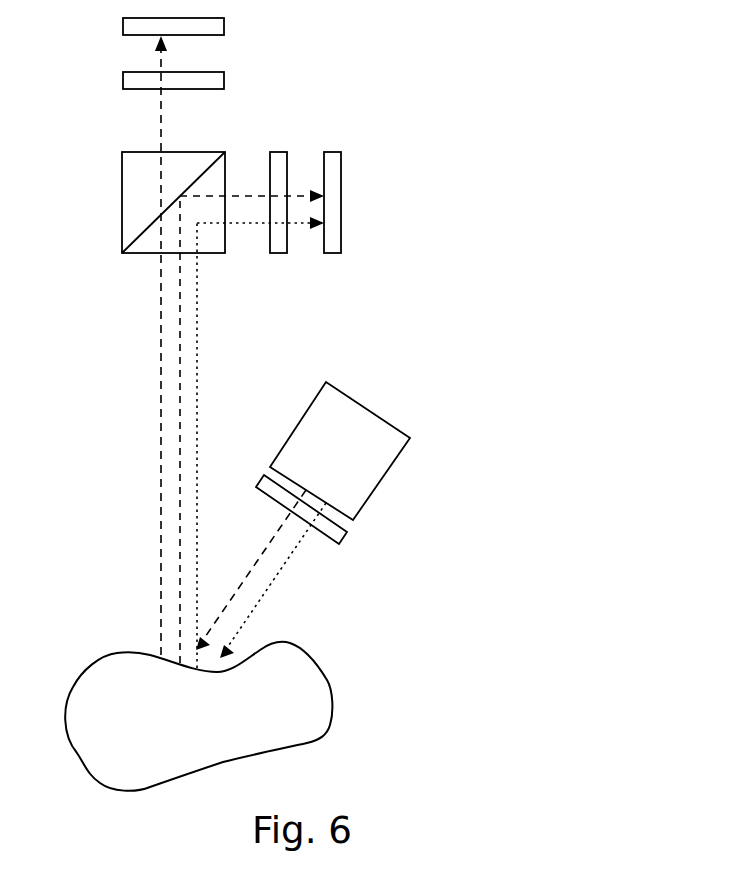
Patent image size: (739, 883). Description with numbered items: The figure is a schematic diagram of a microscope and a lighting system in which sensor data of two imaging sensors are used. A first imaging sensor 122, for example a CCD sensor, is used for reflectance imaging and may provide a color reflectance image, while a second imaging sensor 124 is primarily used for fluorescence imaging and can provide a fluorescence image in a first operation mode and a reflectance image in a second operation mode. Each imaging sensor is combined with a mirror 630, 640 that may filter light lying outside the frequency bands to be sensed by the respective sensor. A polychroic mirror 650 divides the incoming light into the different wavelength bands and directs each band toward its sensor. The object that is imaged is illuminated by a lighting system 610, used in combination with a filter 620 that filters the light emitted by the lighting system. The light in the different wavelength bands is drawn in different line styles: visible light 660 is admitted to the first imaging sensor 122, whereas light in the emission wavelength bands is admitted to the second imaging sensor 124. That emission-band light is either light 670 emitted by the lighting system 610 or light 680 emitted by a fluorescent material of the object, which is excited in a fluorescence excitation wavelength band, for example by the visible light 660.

The first imaging sensor 122 is at (224, 20).
The second imaging sensor 124 is at (339, 152).
The lighting system 610 is at (386, 473).
The filter 620 is at (347, 533).
The mirror 630 is at (224, 75).
The mirror 640 is at (280, 152).
The polychroic mirror 650 is at (122, 218).
The visible light 660 is at (162, 320).
The light emitted by the lighting system 670 is at (197, 347).
The light emitted by fluorescent material 680 is at (182, 317).